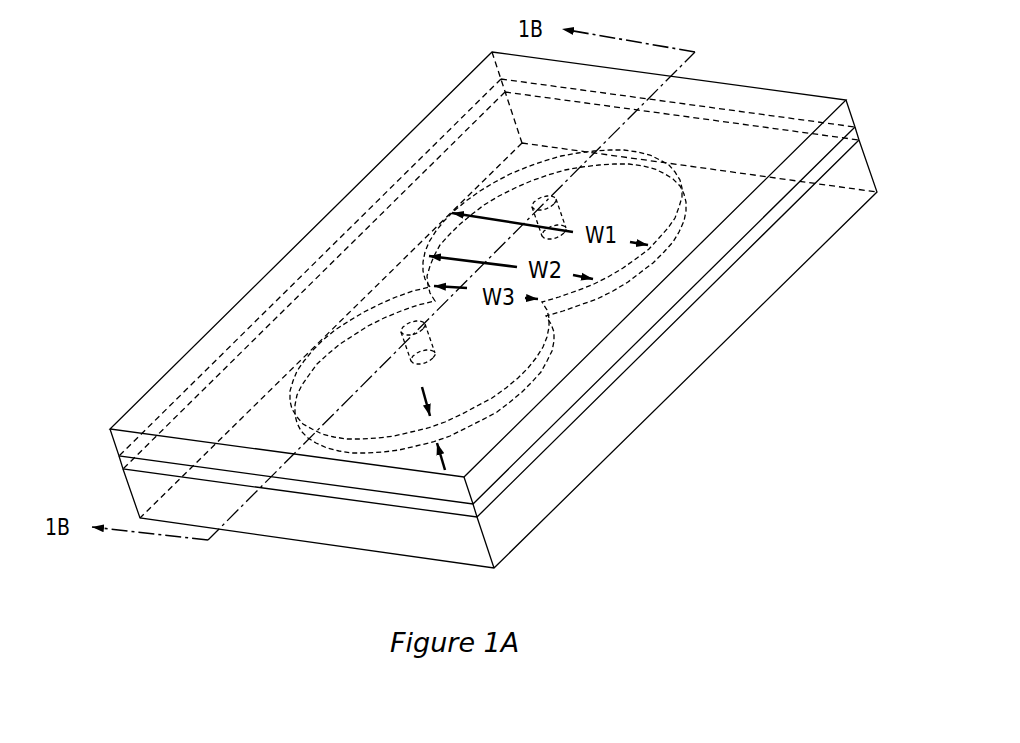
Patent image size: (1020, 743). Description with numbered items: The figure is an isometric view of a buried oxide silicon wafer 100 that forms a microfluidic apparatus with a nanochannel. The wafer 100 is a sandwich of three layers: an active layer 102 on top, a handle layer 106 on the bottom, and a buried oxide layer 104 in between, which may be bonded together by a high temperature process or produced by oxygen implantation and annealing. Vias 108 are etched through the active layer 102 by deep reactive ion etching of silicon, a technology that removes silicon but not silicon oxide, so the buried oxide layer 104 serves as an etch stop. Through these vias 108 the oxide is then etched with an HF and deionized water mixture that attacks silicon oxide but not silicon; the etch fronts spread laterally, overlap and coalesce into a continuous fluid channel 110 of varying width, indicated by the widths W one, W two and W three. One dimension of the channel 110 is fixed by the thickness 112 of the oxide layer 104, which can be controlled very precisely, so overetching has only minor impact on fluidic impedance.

The silicon wafer 100 is at (213, 209).
The active layer 102 is at (110, 430).
The buried oxide layer 104 is at (122, 467).
The handle layer 106 is at (745, 287).
The vias 108 is at (558, 221).
The fluid channel 110 is at (487, 185).
The thickness 112 is at (435, 430).